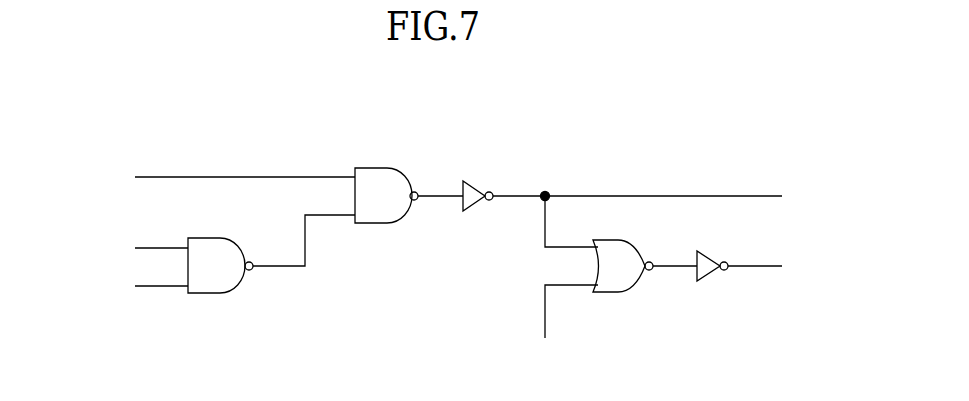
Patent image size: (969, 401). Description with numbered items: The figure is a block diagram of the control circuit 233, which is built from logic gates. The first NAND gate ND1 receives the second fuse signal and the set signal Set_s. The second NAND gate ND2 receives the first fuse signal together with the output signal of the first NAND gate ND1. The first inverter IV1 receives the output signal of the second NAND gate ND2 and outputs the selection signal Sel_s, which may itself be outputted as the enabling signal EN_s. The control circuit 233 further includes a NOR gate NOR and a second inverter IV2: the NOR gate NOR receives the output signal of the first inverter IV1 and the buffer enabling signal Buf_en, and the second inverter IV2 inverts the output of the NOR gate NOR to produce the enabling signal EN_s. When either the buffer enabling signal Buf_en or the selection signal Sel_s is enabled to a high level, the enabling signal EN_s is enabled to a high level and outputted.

The control circuit 233 is at (782, 115).
The first NAND gate ND1 is at (220, 280).
The second NAND gate ND2 is at (386, 211).
The first inverter IV1 is at (478, 208).
The NOR gate NOR is at (623, 282).
The second inverter IV2 is at (713, 279).